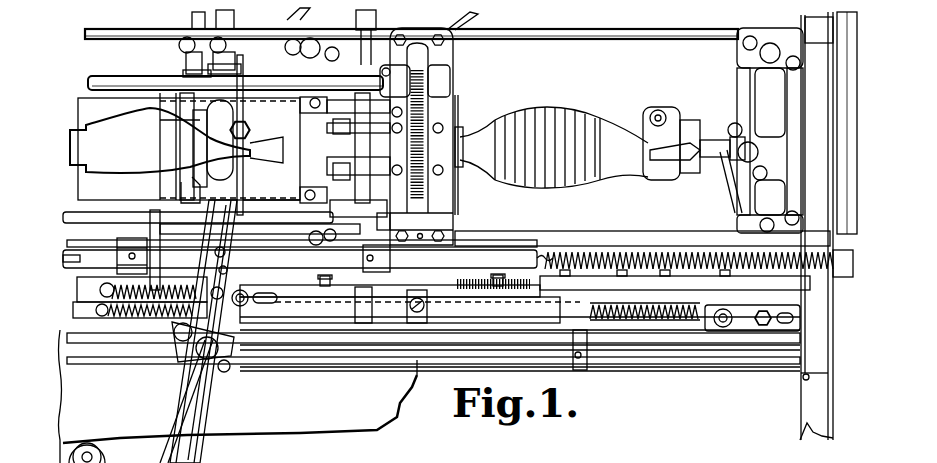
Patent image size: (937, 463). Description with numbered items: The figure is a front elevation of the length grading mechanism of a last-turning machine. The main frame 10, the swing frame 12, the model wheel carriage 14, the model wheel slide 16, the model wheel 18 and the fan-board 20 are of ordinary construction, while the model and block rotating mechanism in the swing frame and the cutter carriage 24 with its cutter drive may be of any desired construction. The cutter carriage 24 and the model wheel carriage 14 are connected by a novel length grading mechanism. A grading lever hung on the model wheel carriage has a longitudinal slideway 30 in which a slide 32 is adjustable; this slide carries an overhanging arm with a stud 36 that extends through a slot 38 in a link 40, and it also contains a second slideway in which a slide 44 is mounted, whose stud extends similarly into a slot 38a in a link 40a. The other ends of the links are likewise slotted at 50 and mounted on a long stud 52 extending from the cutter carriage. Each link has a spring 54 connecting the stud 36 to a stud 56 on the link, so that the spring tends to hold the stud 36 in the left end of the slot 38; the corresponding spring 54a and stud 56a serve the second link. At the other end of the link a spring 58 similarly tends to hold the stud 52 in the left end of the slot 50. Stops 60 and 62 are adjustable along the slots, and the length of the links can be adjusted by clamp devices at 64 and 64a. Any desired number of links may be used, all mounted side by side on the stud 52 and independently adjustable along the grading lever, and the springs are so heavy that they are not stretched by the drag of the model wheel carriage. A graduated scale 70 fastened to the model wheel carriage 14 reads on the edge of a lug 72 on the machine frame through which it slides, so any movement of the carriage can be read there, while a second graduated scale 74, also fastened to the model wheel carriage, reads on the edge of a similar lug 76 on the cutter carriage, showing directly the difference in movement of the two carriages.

The main frame 10 is at (813, 412).
The swing frame 12 is at (531, 40).
The model wheel carriage 14 is at (170, 104).
The model wheel slide 16 is at (197, 125).
The model wheel 18 is at (233, 118).
The fan-board 20 is at (250, 105).
The cutter carriage 24 is at (647, 290).
The longitudinal slideway 30 is at (247, 199).
The slide 32 is at (260, 292).
The stud 36 is at (212, 347).
The slot 38 is at (247, 325).
The slot 38a is at (267, 320).
The link 40 is at (307, 307).
The link 40a is at (342, 317).
The slide 44 is at (193, 415).
The slot 50 is at (743, 332).
The long stud 52 is at (727, 330).
The spring 54 is at (128, 238).
The spring 54a is at (433, 348).
The stud 56 is at (107, 285).
The stud 56a is at (110, 312).
The spring 58 is at (607, 294).
The stop 60 is at (274, 285).
The stop 62 is at (777, 328).
The clamp device 64 is at (425, 297).
The clamp device 64a is at (417, 330).
The graduated scale 70 is at (437, 340).
The lug 72 is at (585, 372).
The second graduated scale 74 is at (397, 283).
The lug 76 is at (443, 370).